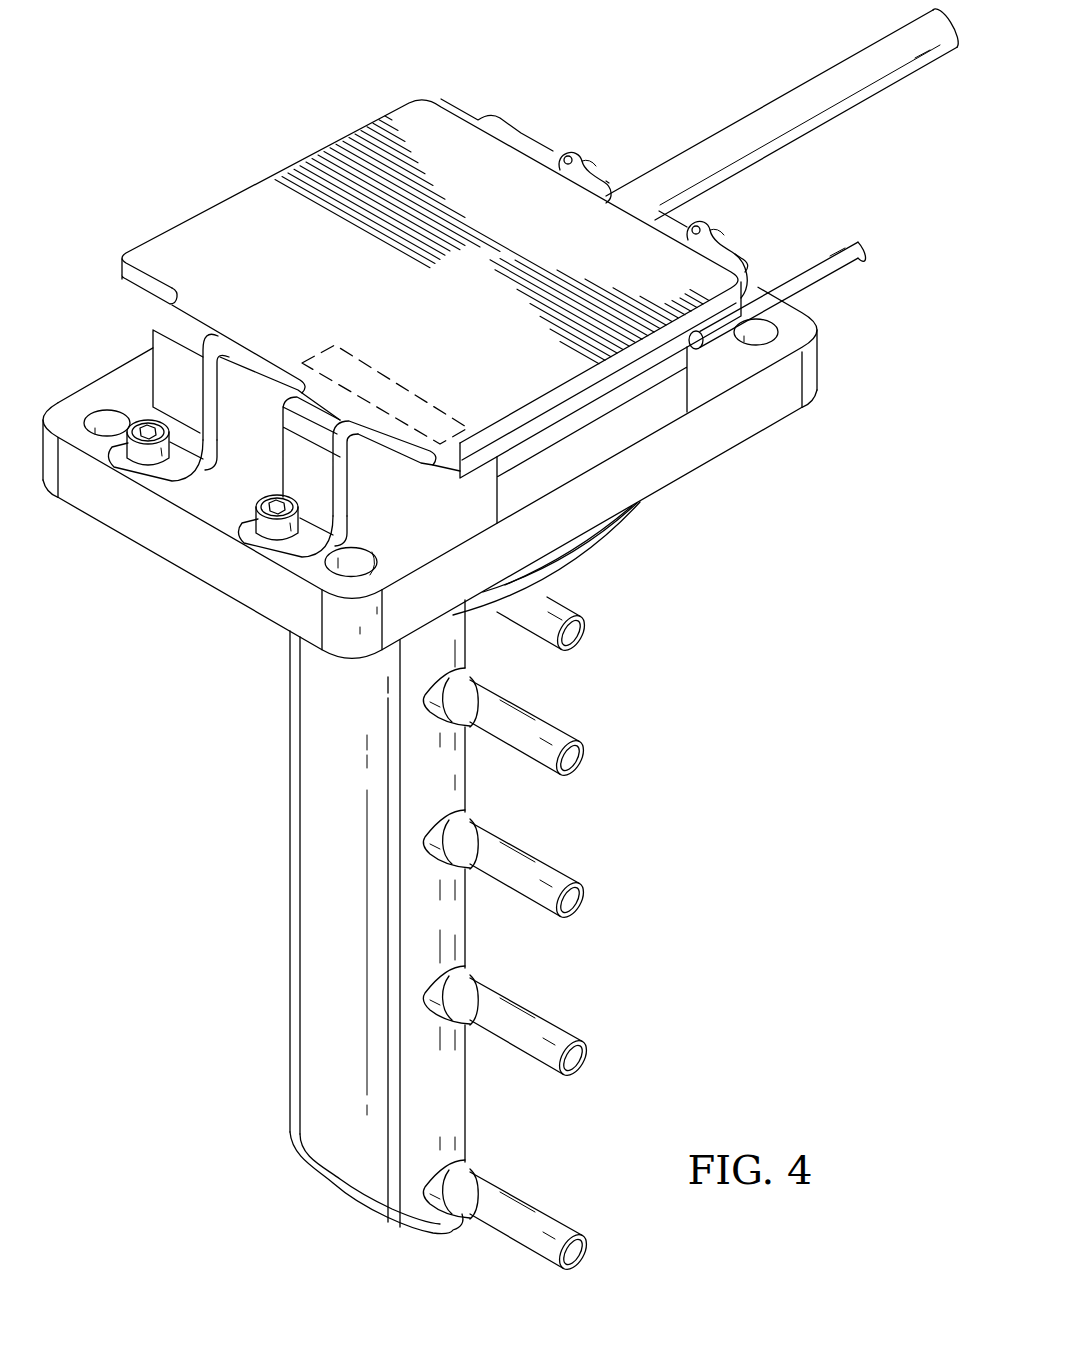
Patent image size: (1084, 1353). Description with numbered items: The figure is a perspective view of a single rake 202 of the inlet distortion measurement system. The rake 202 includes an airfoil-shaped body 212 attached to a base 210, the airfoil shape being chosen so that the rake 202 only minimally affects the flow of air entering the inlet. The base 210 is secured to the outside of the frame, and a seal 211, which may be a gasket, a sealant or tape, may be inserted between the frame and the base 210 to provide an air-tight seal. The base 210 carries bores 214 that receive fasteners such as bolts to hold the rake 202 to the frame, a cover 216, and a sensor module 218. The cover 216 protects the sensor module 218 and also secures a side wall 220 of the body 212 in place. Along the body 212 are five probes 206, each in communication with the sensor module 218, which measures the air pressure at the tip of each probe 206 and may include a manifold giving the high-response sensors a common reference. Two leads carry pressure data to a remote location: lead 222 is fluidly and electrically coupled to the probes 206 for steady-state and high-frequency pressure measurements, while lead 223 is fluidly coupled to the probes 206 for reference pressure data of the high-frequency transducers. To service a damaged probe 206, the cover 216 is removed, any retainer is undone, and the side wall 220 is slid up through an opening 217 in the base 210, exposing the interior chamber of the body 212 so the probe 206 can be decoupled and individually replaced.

The rake 202 is at (234, 90).
The probe 206 is at (596, 648).
The base 210 is at (130, 372).
The seal 211 is at (612, 555).
The body 212 is at (292, 1070).
The bores 214 is at (100, 420).
The cover 216 is at (212, 215).
The opening 217 is at (389, 382).
The sensor module 218 is at (640, 432).
The side wall 220 is at (322, 920).
The lead 222 is at (786, 94).
The lead 223 is at (803, 268).